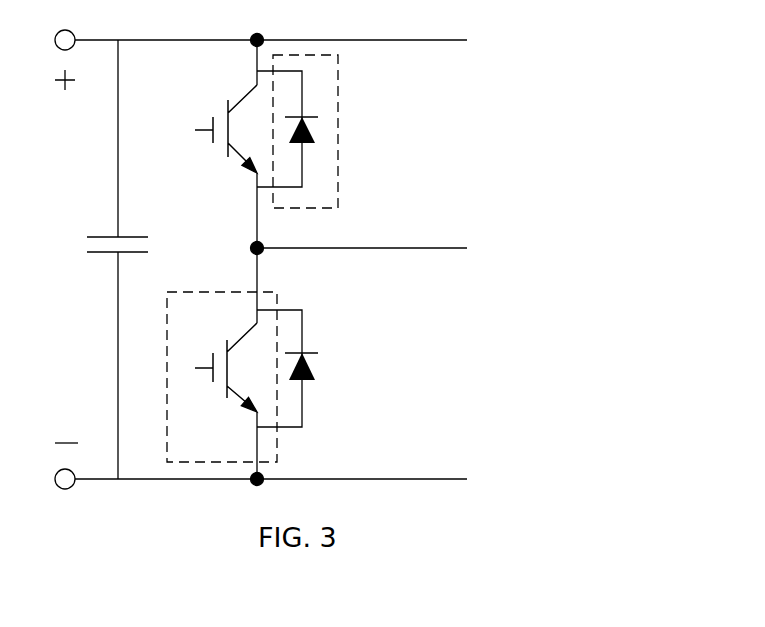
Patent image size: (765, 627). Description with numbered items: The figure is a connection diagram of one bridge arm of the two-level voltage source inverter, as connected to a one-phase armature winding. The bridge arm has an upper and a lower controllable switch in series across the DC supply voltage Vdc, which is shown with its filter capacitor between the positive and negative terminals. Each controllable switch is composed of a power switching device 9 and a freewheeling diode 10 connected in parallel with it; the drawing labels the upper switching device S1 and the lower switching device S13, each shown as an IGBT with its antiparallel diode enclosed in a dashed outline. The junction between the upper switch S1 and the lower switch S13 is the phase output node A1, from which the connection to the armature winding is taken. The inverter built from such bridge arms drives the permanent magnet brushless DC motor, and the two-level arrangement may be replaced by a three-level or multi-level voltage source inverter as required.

The freewheeling diode 10 is at (338, 127).
The power switching device 9 is at (277, 398).
The upper IGBT switch S1 is at (218, 127).
The lower IGBT switch S13 is at (219, 375).
The phase output node A1 is at (337, 249).
The DC link capacitor / DC voltage Vdc is at (98, 259).